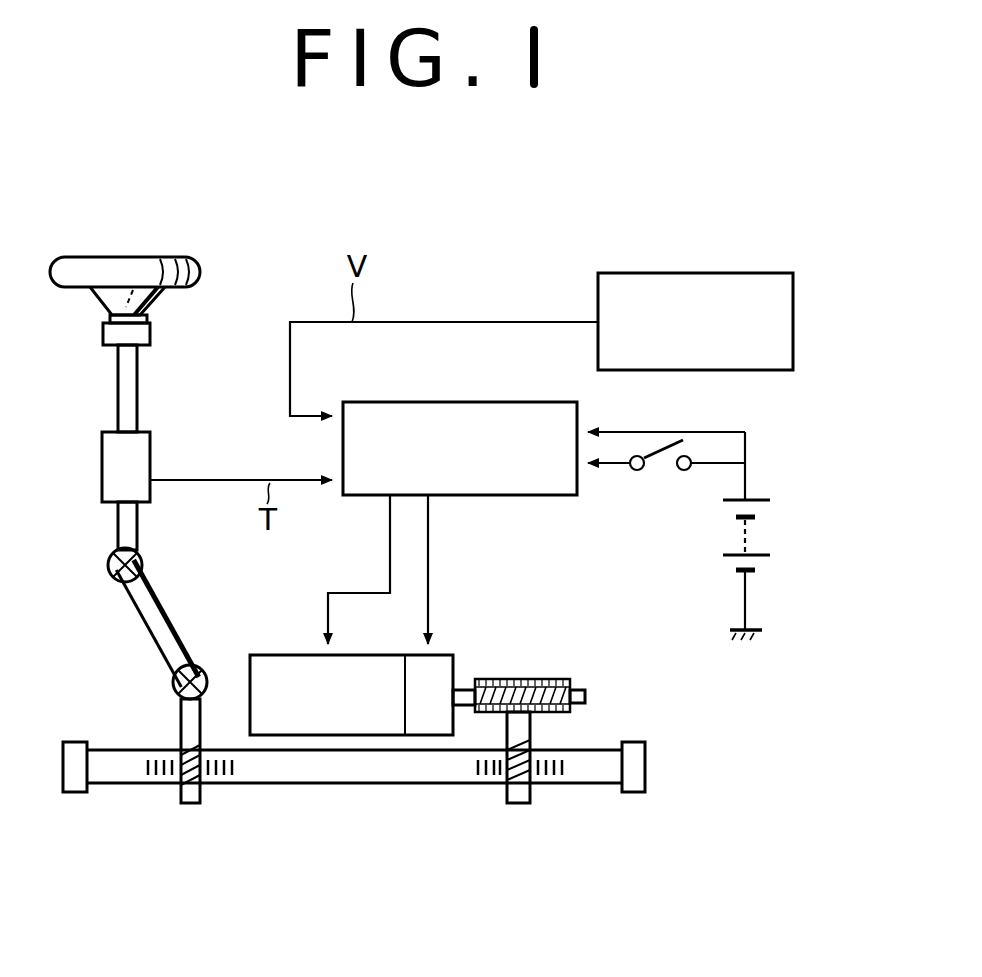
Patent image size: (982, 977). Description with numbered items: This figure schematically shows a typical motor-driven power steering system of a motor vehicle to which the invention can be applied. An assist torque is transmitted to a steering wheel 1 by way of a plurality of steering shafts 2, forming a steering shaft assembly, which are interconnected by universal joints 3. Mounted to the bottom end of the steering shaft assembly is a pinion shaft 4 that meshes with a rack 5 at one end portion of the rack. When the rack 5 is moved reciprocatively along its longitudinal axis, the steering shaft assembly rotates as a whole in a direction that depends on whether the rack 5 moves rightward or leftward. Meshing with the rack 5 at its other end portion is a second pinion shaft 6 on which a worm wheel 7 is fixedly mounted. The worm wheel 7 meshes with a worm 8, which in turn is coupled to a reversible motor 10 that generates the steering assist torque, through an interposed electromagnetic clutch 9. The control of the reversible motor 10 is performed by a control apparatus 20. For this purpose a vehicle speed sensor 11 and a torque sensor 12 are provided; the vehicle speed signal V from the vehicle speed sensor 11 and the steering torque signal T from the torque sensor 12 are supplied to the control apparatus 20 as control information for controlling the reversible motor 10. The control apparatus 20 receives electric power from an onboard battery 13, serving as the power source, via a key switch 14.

The steering wheel 1 is at (155, 256).
The steering shafts 2 is at (137, 383).
The universal joints 3 is at (108, 565).
The pinion shaft 4 is at (190, 803).
The rack 5 is at (378, 770).
The pinion shaft 6 is at (520, 803).
The worm wheel 7 is at (538, 679).
The worm 8 is at (585, 697).
The electromagnetic clutch 9 is at (453, 655).
The reversible motor 10 is at (290, 655).
The vehicle speed sensor 11 is at (717, 273).
The torque sensor 12 is at (150, 447).
The onboard battery 13 is at (760, 527).
The key switch 14 is at (665, 468).
The control apparatus 20 is at (480, 400).